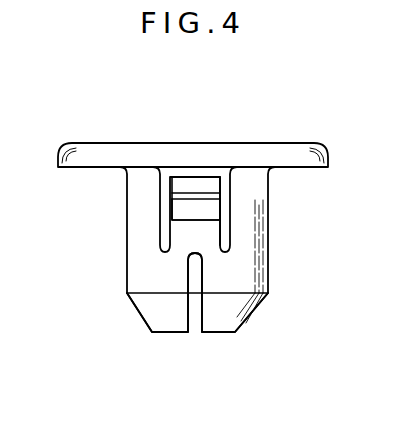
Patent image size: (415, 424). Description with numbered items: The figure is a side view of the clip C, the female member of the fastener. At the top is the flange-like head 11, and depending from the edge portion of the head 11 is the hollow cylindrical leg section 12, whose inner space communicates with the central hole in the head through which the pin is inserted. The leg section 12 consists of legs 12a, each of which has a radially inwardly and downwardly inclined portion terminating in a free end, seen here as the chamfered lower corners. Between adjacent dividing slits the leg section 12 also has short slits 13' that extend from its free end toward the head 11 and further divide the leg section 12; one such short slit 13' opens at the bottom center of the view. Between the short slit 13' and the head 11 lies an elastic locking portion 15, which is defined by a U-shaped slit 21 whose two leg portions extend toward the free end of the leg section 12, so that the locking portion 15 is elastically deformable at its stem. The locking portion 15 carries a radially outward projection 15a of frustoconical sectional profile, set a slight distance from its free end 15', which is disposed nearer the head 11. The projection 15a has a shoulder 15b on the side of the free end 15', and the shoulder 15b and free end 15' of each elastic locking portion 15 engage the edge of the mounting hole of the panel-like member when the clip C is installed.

The flange-like head 11 is at (261, 143).
The clip C is at (60, 139).
The leg section 12 is at (268, 272).
The legs 12a is at (138, 313).
The short slits 13' is at (204, 318).
The free end of elastic locking portion 15' is at (195, 175).
The elastic locking portion 15 is at (147, 227).
The shoulder 15b is at (173, 193).
The radially outward projection 15a is at (173, 206).
The U-shaped slit 21 is at (225, 196).